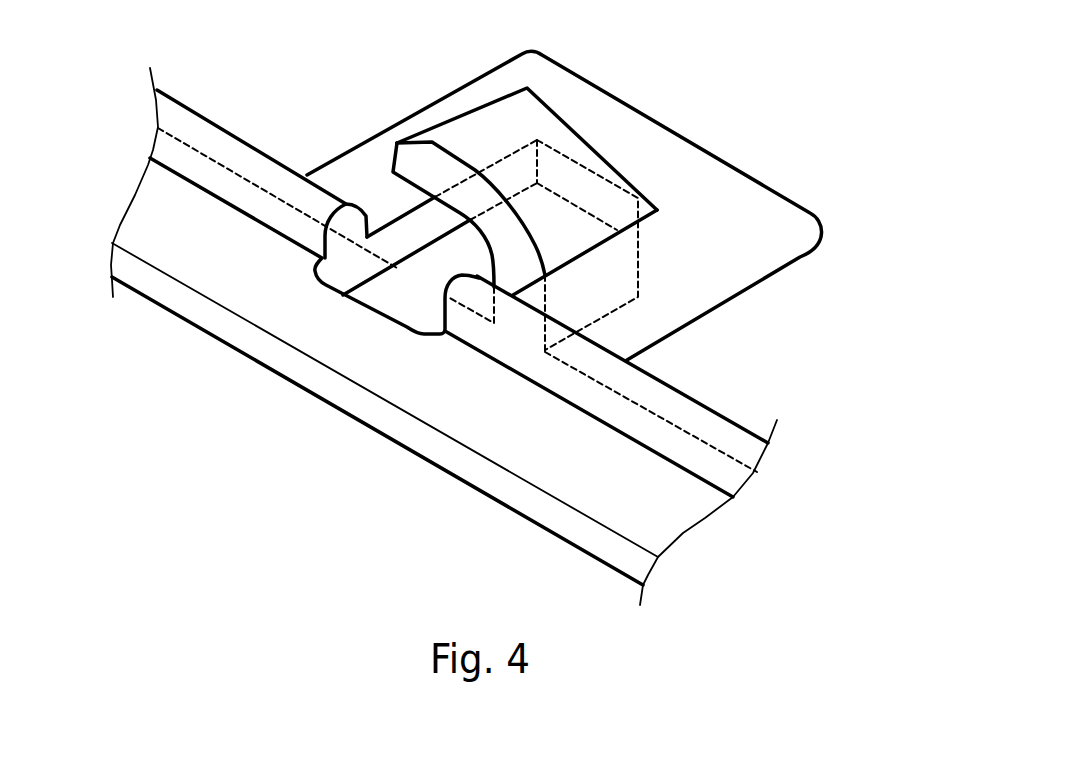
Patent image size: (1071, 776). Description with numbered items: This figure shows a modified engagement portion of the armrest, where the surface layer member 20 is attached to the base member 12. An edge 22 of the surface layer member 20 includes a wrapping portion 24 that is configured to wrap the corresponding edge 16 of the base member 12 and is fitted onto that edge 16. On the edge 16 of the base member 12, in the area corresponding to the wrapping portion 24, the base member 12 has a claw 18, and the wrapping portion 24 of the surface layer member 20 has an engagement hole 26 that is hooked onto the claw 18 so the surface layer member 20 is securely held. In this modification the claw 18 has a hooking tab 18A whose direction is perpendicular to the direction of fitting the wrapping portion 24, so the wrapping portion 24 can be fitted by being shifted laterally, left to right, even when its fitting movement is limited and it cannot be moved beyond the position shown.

The wrapping portion 24 is at (425, 103).
The claw 18 is at (583, 182).
The hooking tab 18A is at (505, 127).
The engagement hole 26 is at (413, 233).
The edge 16 is at (433, 273).
The base member 12 is at (459, 301).
The edge 22 is at (470, 425).
The surface layer member 20 is at (444, 336).